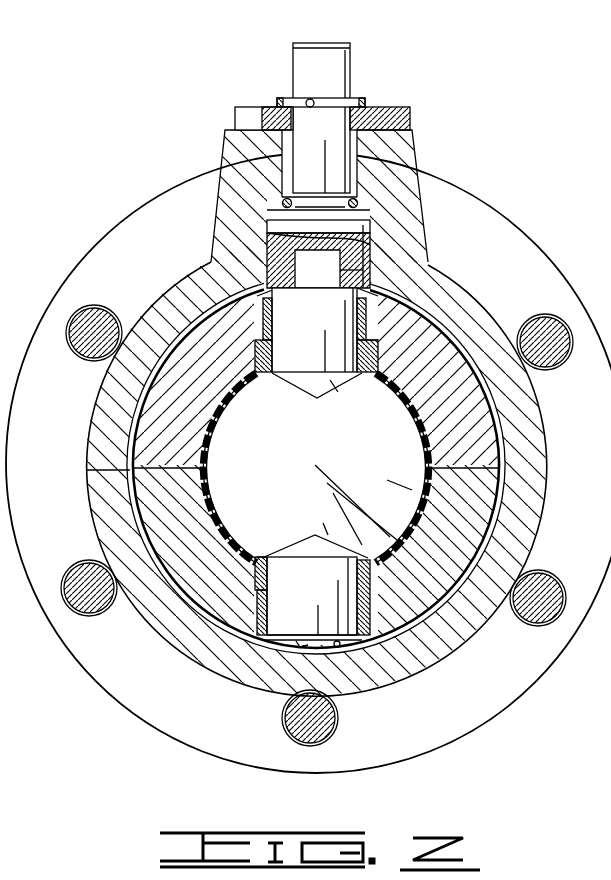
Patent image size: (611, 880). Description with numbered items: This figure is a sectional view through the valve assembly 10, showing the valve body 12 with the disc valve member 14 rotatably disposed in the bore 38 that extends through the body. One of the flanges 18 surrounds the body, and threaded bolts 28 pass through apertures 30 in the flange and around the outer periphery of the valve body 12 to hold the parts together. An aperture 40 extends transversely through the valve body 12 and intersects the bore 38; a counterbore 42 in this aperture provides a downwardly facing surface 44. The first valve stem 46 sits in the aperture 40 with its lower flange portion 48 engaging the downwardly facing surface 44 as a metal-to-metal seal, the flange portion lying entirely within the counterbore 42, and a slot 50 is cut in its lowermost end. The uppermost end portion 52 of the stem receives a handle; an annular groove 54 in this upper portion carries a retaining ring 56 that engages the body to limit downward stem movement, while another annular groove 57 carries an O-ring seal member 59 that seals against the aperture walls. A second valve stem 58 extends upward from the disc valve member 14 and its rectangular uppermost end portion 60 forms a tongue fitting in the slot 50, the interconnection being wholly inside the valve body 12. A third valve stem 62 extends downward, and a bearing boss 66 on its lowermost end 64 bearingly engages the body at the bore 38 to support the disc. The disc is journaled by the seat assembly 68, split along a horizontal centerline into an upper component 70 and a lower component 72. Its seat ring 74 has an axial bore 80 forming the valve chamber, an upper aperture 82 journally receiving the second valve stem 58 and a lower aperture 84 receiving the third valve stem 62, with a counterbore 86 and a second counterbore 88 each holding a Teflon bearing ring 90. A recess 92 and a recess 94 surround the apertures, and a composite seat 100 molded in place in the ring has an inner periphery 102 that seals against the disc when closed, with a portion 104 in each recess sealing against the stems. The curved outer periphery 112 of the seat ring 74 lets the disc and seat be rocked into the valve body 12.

The valve assembly 10 is at (436, 111).
The valve body 12 is at (192, 632).
The disc valve member 14 is at (402, 447).
The flange 18 is at (100, 678).
The threaded bolt 28 is at (96, 305).
The aperture 30 is at (86, 350).
The bore 38 is at (403, 624).
The aperture 40 is at (284, 162).
The counterbore 42 is at (365, 242).
The downwardly facing surface 44 is at (371, 222).
The first valve stem 46 is at (356, 156).
The lower flange portion 48 is at (268, 228).
The slot 50 is at (364, 271).
The uppermost end portion 52 is at (350, 84).
The annular groove 54 is at (310, 99).
The retaining ring 56 is at (280, 101).
The annular groove 57 is at (324, 199).
The second valve stem 58 is at (371, 327).
The O-ring seal member 59 is at (284, 201).
The uppermost end portion 60 is at (372, 296).
The third valve stem 62 is at (374, 597).
The lowermost end 64 is at (336, 650).
The bearing boss 66 is at (300, 650).
The seat assembly 68 is at (222, 490).
The upper component 70 is at (145, 428).
The lower component 72 is at (150, 480).
The seat ring 74 is at (486, 496).
The bore 80 is at (219, 514).
The upper aperture 82 is at (273, 303).
The lower aperture 84 is at (276, 630).
The counterbore 86 is at (264, 321).
The second counterbore 88 is at (259, 609).
The bearing ring 90 is at (273, 334).
The recess 92 is at (378, 352).
The recess 94 is at (254, 582).
The composite seat 100 is at (217, 431).
The inner periphery 102 is at (214, 449).
The portion 104 is at (378, 361).
The outer periphery 112 is at (186, 592).